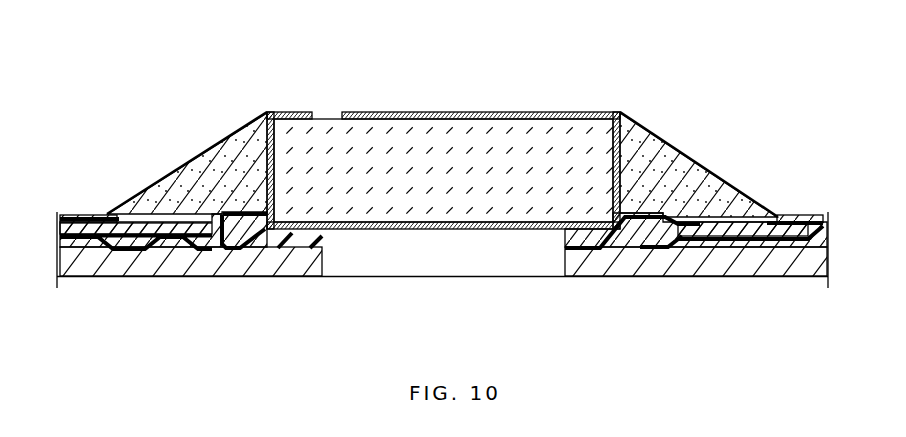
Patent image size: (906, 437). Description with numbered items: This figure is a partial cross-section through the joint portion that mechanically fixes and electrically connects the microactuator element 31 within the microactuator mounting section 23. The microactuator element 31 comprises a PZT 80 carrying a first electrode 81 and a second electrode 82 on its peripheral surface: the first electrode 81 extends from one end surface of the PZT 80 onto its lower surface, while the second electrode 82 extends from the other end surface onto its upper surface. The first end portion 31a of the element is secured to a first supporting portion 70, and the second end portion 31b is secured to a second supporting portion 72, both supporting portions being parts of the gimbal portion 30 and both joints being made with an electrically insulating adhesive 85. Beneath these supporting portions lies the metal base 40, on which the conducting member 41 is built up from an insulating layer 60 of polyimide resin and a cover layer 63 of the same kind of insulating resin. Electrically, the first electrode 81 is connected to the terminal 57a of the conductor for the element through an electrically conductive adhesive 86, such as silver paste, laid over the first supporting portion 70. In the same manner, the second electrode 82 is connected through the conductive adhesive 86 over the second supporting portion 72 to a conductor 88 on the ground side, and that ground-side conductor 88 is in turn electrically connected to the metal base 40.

The pressure sensor 23 is at (435, 119).
The gimbal portion 30 is at (105, 288).
The microactuator element 31 is at (435, 141).
The first end portion 31a is at (270, 130).
The second end portion 31b is at (622, 153).
The metal base 40 is at (150, 260).
The conducting member 41 is at (103, 194).
The terminal 57a is at (152, 222).
The insulating layer 60 is at (78, 240).
The cover layer 63 is at (78, 215).
The first supporting portion 70 is at (210, 267).
The second supporting portion 72 is at (667, 260).
The PZT 80 is at (427, 162).
The first electrode 81 is at (366, 240).
The second electrode 82 is at (482, 115).
The electrically insulating adhesive 85 is at (267, 240).
The electrically conductive adhesive 86 is at (202, 168).
The conductor on the ground side 88 is at (753, 220).